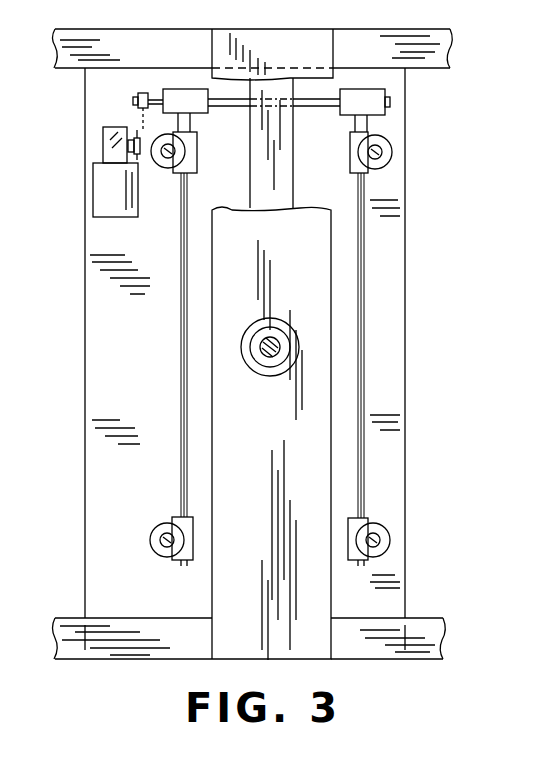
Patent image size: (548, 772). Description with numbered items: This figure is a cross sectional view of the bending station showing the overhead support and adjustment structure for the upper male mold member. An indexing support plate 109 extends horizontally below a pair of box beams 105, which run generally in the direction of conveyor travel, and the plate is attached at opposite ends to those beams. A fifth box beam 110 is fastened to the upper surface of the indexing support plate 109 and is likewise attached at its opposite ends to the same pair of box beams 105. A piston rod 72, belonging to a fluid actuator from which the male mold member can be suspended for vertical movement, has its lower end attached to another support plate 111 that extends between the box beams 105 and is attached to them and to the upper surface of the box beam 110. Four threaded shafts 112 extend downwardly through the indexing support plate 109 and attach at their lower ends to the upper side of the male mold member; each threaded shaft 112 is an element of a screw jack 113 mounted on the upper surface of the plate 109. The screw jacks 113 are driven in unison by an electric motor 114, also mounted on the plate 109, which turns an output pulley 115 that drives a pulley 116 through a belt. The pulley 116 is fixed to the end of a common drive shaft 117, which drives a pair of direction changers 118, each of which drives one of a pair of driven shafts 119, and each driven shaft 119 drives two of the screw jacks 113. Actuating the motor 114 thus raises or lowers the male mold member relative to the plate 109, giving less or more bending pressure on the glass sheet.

The box beams 105 is at (425, 40).
The indexing support plate 109 is at (88, 390).
The fifth box beam 110 is at (291, 155).
The support plate 111 is at (228, 573).
The threaded shafts 112 is at (166, 160).
The screw jack 113 is at (204, 152).
The electric motor 114 is at (102, 190).
The output pulley 115 is at (134, 140).
The pulley 116 is at (140, 94).
The common drive shaft 117 is at (315, 95).
The direction changers 118 is at (186, 100).
The driven shafts 119 is at (180, 335).
The piston rod 72 is at (272, 357).